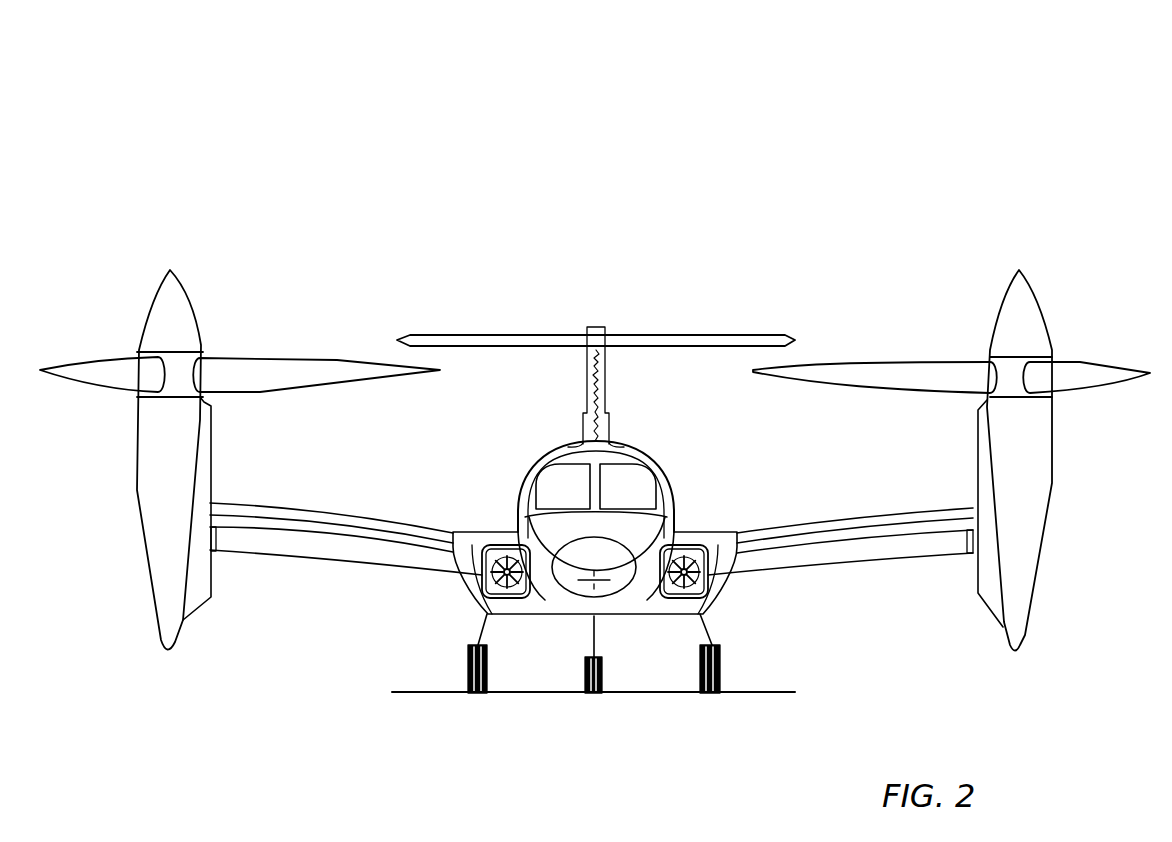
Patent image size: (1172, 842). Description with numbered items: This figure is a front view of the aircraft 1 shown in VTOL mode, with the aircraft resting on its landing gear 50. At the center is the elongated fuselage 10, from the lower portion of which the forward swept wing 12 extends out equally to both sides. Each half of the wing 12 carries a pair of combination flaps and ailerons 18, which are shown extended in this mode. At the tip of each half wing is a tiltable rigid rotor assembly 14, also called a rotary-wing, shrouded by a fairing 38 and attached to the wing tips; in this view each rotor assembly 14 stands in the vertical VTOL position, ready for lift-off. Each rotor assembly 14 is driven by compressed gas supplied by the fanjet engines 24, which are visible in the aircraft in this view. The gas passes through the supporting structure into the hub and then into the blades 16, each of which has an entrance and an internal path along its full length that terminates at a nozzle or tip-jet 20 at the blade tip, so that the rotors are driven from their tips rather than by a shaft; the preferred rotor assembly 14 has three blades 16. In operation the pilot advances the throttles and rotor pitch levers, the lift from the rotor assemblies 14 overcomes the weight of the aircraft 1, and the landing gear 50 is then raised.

The aircraft 1 is at (721, 177).
The fuselage 10 is at (667, 530).
The forward swept wing 12 is at (323, 523).
The tiltable rigid rotor assembly 14 is at (182, 370).
The blades 16 is at (265, 373).
The combination flaps and ailerons 18 is at (333, 548).
The tip-jet 20 is at (778, 376).
The fanjet engines 24 is at (470, 570).
The fairing 38 is at (153, 468).
The landing gear 50 is at (478, 625).